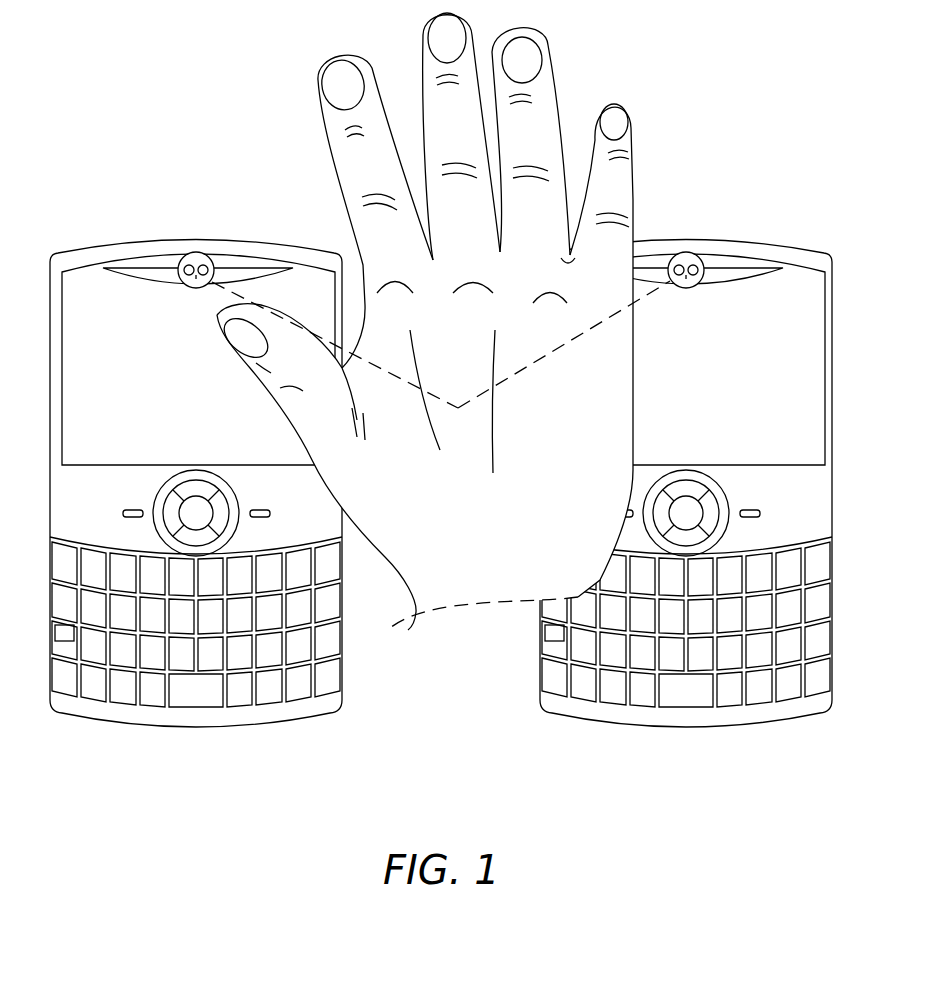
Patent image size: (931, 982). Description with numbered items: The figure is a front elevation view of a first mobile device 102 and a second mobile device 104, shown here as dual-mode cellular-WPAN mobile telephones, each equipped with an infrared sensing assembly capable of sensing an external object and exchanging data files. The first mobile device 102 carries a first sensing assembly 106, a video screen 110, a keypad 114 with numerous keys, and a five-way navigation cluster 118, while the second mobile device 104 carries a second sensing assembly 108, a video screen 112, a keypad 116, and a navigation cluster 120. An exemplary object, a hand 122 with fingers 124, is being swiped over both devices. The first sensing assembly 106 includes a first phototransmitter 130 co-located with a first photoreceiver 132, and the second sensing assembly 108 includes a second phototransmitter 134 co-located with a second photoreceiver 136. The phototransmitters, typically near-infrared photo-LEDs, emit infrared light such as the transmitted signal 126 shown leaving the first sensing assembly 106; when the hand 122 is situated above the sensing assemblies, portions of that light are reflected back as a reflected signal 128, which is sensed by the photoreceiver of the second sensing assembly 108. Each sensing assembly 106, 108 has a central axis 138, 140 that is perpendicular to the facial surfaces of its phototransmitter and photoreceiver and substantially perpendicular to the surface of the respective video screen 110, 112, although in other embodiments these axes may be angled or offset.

The first mobile device 102 is at (785, 730).
The second mobile device 104 is at (294, 730).
The first sensing assembly 106 is at (690, 246).
The second sensing assembly 108 is at (195, 252).
The video screen 110 is at (764, 433).
The video screen 112 is at (262, 435).
The keypad 114 is at (553, 682).
The keypad 116 is at (62, 681).
The navigation cluster 118 is at (688, 485).
The navigation cluster 120 is at (197, 485).
The hand 122 is at (560, 486).
The fingers 124 is at (423, 40).
The transmitted signal 126 is at (537, 362).
The reflected signal 128 is at (277, 311).
The first phototransmitter 130 is at (672, 271).
The first photoreceiver 132 is at (700, 283).
The second phototransmitter 134 is at (184, 262).
The second photoreceiver 136 is at (209, 262).
The central axis 138 is at (691, 278).
The central axis 140 is at (200, 278).